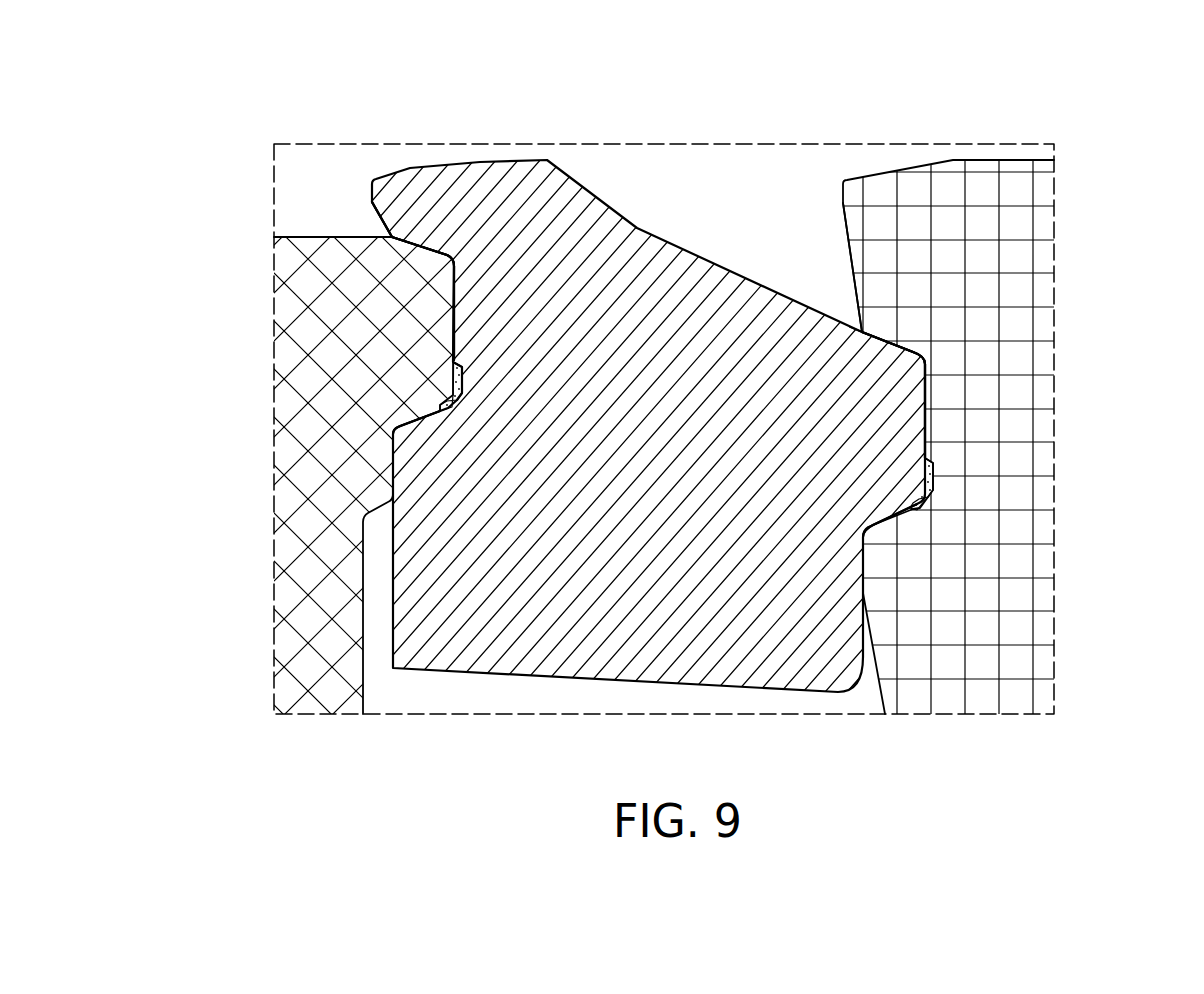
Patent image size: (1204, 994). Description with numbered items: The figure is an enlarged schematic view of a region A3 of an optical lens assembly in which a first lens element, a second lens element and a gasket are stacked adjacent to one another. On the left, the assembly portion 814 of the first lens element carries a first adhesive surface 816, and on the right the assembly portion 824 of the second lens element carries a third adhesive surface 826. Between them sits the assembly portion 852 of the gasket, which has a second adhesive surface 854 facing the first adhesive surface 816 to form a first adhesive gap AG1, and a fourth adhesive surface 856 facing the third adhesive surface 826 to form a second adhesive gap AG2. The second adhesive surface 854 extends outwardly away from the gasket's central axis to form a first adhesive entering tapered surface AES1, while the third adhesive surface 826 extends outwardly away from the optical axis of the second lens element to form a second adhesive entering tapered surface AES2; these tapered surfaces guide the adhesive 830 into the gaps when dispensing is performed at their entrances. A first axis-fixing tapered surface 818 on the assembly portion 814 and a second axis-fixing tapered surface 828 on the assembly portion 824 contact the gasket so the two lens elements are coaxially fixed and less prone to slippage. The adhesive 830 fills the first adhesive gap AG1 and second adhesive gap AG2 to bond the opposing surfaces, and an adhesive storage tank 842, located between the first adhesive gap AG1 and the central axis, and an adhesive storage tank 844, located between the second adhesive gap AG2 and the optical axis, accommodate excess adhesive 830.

The assembly portion 814 is at (317, 420).
The first adhesive surface 816 is at (437, 342).
The first axis-fixing tapered surface 818 is at (401, 416).
The assembly portion 824 is at (1013, 427).
The third adhesive surface 826 is at (942, 390).
The second axis-fixing tapered surface 828 is at (914, 521).
The adhesive 830 is at (460, 404).
The adhesive storage tank 842 is at (476, 380).
The adhesive storage tank 844 is at (944, 473).
The assembly portion 852 is at (572, 225).
The second adhesive surface 854 is at (464, 290).
The fourth adhesive surface 856 is at (910, 429).
The first adhesive gap AG1 is at (378, 243).
The second adhesive gap AG2 is at (846, 325).
The first adhesive entering tapered surface AES1 is at (365, 224).
The second adhesive entering tapered surface AES2 is at (839, 263).
The region A3 is at (988, 142).